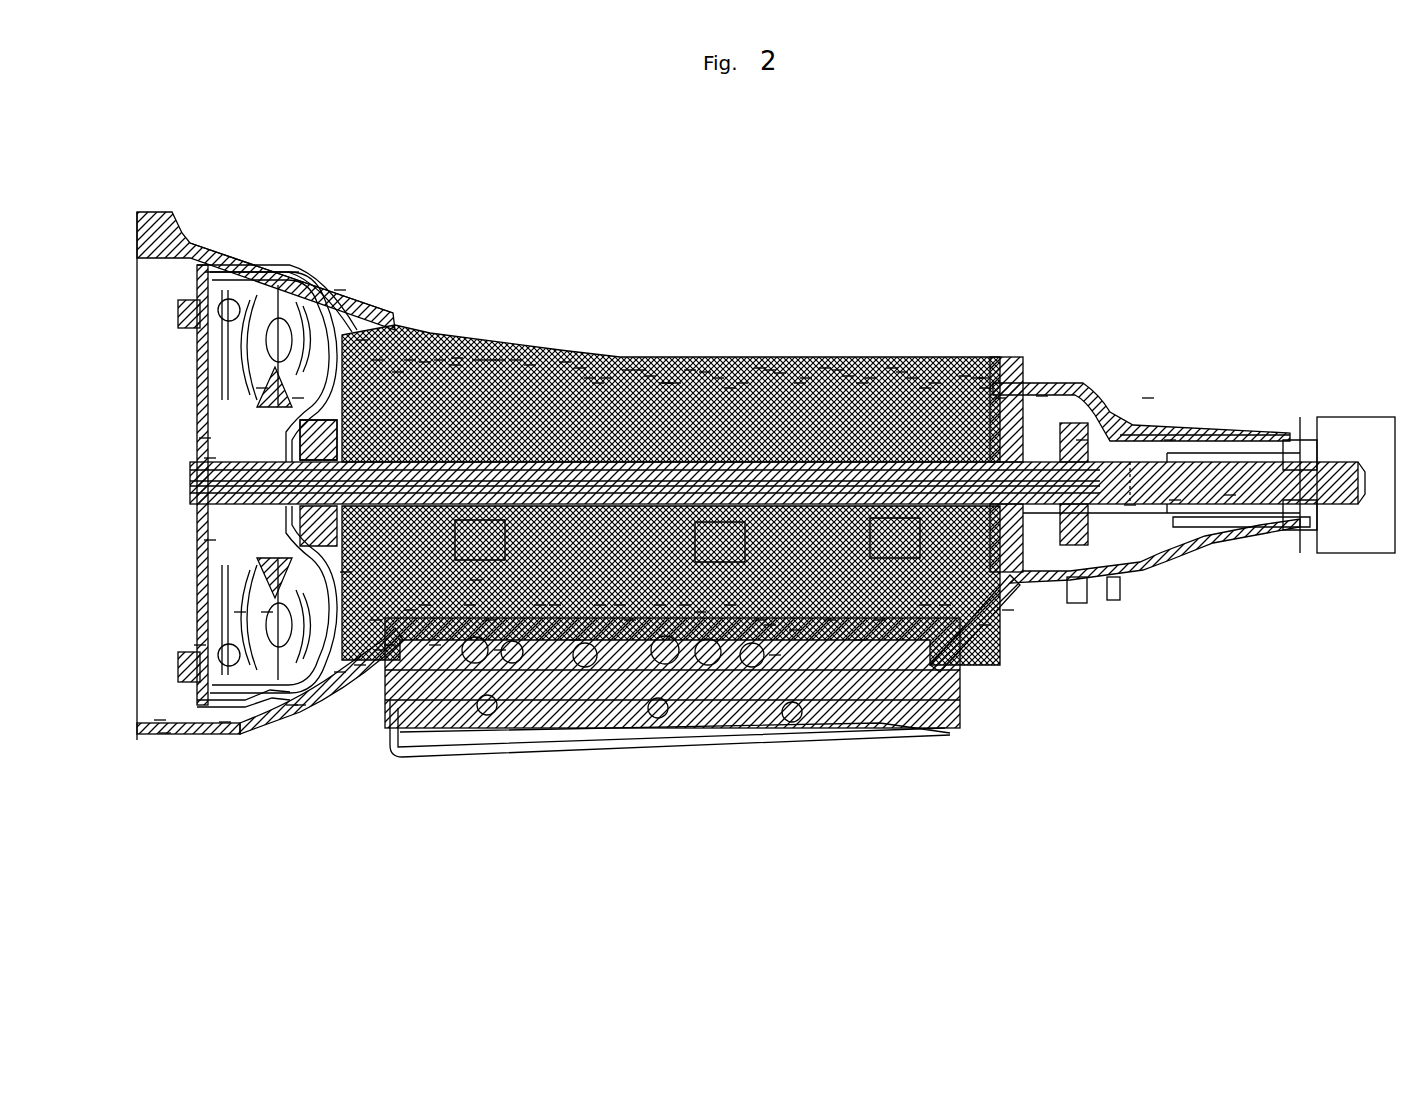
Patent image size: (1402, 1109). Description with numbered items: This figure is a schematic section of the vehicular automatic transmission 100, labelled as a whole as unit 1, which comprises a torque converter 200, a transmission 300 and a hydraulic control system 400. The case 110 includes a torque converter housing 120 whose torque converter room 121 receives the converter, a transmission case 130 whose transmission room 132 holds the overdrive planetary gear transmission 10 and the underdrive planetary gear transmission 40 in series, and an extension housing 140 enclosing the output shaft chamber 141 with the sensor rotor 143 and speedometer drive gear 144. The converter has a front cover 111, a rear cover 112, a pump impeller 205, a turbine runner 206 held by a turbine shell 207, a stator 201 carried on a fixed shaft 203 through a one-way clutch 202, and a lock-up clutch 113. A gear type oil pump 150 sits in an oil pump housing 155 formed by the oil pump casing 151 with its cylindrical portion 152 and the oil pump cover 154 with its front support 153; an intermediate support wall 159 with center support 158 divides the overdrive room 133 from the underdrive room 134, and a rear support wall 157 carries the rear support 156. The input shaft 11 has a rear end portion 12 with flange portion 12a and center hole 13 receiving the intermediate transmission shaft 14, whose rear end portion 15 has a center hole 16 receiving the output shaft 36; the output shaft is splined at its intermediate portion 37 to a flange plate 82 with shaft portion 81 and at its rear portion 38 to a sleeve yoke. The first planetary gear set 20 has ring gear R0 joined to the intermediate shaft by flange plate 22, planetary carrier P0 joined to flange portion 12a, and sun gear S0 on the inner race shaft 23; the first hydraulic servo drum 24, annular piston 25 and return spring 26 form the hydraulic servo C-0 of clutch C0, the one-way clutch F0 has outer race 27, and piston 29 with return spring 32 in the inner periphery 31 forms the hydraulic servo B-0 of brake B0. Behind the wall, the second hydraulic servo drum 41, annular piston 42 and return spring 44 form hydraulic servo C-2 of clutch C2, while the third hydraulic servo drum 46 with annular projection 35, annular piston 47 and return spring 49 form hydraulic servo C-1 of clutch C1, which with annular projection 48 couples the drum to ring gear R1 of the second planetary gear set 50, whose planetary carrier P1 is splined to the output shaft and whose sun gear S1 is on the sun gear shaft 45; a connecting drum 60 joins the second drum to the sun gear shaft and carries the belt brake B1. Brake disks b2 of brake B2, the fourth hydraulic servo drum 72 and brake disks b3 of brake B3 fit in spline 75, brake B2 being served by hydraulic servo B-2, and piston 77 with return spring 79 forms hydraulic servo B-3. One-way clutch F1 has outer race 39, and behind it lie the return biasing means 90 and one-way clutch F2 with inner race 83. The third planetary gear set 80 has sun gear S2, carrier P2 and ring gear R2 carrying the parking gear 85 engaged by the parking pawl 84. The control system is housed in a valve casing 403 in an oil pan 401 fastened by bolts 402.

The automatic transmission 1 is at (775, 655).
The overdrive planetary gear transmission 10 is at (455, 365).
The input shaft 11 is at (205, 438).
The rear end portion 12 is at (346, 572).
The flange portion 12a is at (490, 620).
The center hole 13 is at (370, 636).
The intermediate transmission shaft 14 is at (472, 596).
The rear end portion 15 is at (630, 620).
The center hole 16 is at (700, 612).
The first planetary gear set 20 is at (480, 540).
The flange plate 22 is at (530, 365).
The inner race shaft 23 is at (410, 360).
The first hydraulic servo drum 24 is at (425, 362).
The annular piston 25 is at (457, 358).
The return spring 26 is at (318, 439).
The outer race 27 is at (490, 360).
The piston 29 is at (565, 362).
The inner periphery 31 is at (540, 605).
The return spring 32 is at (500, 650).
The annular projection 35 is at (620, 605).
The output shaft 36 is at (685, 605).
The intermediate portion 37 is at (1008, 610).
The rear portion 38 is at (1230, 495).
The outer race 39 is at (806, 378).
The underdrive planetary gear transmission 40 is at (945, 605).
The second hydraulic servo drum 41 is at (598, 383).
The annular piston 42 is at (606, 378).
The return spring 44 is at (640, 370).
The sun gear shaft 45 is at (825, 368).
The third hydraulic servo drum 46 is at (668, 383).
The annular piston 47 is at (675, 383).
The annular projection 48 is at (660, 605).
The return spring 49 is at (705, 372).
The second planetary gear set 50 is at (720, 542).
The connecting drum 60 is at (760, 368).
The fourth hydraulic servo drum 72 is at (870, 378).
The spline 75 is at (780, 373).
The piston 77 is at (985, 388).
The return spring 79 is at (985, 625).
The third planetary gear set 80 is at (895, 538).
The shaft portion 81 is at (965, 376).
The flange plate 82 is at (935, 383).
The inner race 83 is at (892, 368).
The parking pawl 84 is at (880, 620).
The parking gear 85 is at (925, 605).
The return biasing means 90 is at (770, 625).
The automatic transmission 100 is at (241, 233).
The case 110 is at (225, 722).
The front cover 111 is at (200, 645).
The rear cover 112 is at (360, 665).
The direct coupling clutch 113 is at (165, 733).
The torque converter housing 120 is at (340, 672).
The torque converter room 121 is at (160, 720).
The transmission case 130 is at (985, 378).
The transmission room 132 is at (470, 605).
The overdrive room 133 is at (390, 645).
The underdrive room 134 is at (760, 620).
The extension housing 140 is at (1150, 388).
The output shaft chamber 141 is at (1175, 500).
The sensor rotor 143 is at (1082, 440).
The speedometer drive gear 144 is at (1170, 440).
The gear type oil pump 150 is at (340, 290).
The oil pump casing 151 is at (298, 398).
The cylindrical portion 152 is at (262, 388).
The front support 153 is at (378, 360).
The oil pump cover 154 is at (362, 340).
The oil pump housing 155 is at (240, 612).
The rear support 156 is at (1042, 396).
The rear support wall 157 is at (1000, 398).
The center support 158 is at (600, 605).
The intermediate support wall 159 is at (555, 605).
The torque converter 200 is at (293, 272).
The stator 201 is at (267, 612).
The one-way clutch 202 is at (210, 540).
The fixed shaft 203 is at (210, 458).
The pump impeller 205 is at (380, 650).
The turbine runner 206 is at (300, 705).
The turbine shell 207 is at (292, 705).
The transmission 300 is at (440, 360).
The hydraulic control system 400 is at (575, 640).
The oil pan 401 is at (860, 640).
The bolts 402 is at (1130, 505).
The valve casing 403 is at (830, 620).
The multiple disk brake B0 is at (478, 360).
The belt brake B1 is at (650, 376).
The multiple disk brake B2 is at (770, 370).
The multiple disk brake B3 is at (848, 376).
The hydraulic servo B-0 is at (580, 368).
The second brake piston B-2 is at (838, 370).
The hydraulic servo B-3 is at (978, 378).
The multiple disk clutch C0 is at (425, 605).
The multiple disk clutch C1 is at (690, 370).
The multiple disk clutch C2 is at (628, 370).
The hydraulic servo C-0 is at (404, 362).
The hydraulic servo C-1 is at (665, 383).
The hydraulic servo C-2 is at (595, 368).
The one-way clutch F0 is at (410, 610).
The one-way clutch F1 is at (730, 605).
The one-way clutch F2 is at (795, 630).
The planetary carrier P0 is at (500, 360).
The planetary carrier P1 is at (718, 378).
The carrier P2 is at (902, 372).
The ring gear R0 is at (515, 360).
The ring gear R1 is at (730, 388).
The ring gear R2 is at (925, 388).
The sun gear S0 is at (435, 645).
The sun gear S1 is at (742, 383).
The sun gear S2 is at (912, 378).
The brake disks b2 is at (800, 383).
The brake disks b3 is at (862, 383).